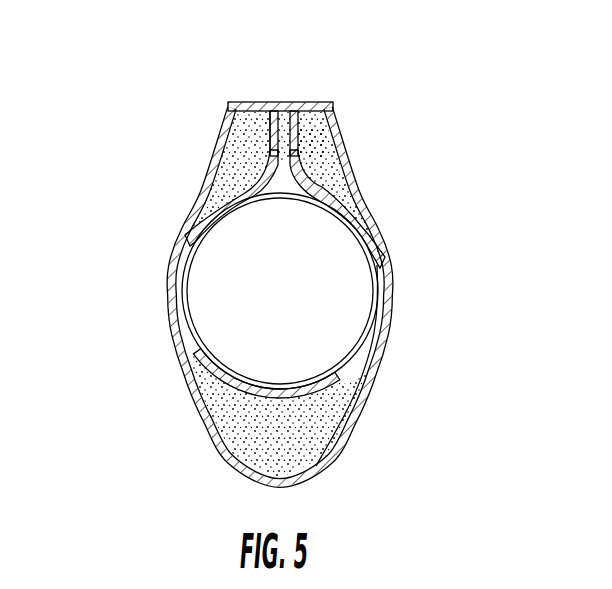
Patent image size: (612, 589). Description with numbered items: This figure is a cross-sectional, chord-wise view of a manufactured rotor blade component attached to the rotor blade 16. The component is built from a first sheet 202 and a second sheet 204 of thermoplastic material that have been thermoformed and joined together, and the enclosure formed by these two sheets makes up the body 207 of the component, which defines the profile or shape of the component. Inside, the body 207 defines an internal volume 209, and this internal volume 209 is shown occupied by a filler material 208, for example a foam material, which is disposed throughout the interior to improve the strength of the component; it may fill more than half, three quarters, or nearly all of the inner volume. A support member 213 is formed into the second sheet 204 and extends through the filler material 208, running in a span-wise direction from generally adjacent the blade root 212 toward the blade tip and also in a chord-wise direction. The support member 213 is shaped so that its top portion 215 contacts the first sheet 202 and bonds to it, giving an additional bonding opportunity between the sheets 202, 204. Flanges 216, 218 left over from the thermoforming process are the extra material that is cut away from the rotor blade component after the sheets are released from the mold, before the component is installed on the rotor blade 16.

The rotor blade 16 is at (240, 258).
The first sheet 202 is at (266, 121).
The second sheet 204 is at (200, 222).
The body 207 is at (240, 140).
The filler material 208 is at (312, 128).
The internal volume 209 is at (327, 163).
The blade root 212 is at (393, 295).
The support member 213 is at (229, 110).
The top portion 215 is at (284, 113).
The flange 216 is at (347, 142).
The flange 218 is at (300, 189).